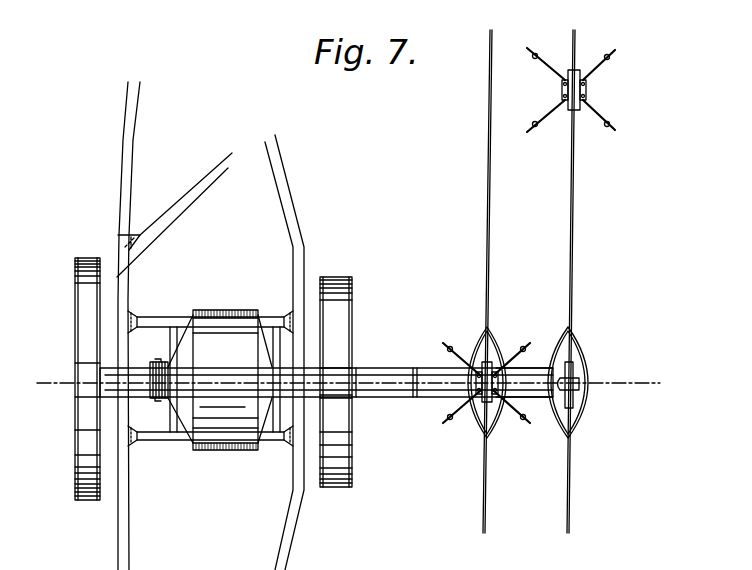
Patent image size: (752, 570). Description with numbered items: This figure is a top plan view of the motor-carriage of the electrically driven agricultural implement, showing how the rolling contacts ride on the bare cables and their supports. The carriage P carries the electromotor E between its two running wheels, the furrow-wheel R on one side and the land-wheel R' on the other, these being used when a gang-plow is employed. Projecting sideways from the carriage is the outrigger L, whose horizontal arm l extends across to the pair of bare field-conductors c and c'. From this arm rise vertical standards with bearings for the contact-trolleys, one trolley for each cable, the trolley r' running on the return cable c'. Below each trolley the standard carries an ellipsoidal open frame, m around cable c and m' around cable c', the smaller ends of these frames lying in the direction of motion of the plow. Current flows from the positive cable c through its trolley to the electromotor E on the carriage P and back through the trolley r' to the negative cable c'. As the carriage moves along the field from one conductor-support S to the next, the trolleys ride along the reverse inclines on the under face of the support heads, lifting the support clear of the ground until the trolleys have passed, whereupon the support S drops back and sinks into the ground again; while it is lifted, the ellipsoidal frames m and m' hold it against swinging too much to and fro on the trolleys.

The furrow-wheel R is at (67, 379).
The land-wheel R' is at (349, 382).
The carriage P is at (279, 352).
The electromotor E is at (217, 351).
The outrigger L is at (377, 368).
The field-conductor c is at (494, 281).
The field-conductor c' is at (581, 281).
The ellipsoidal open frame m is at (497, 380).
The ellipsoidal open frame m' is at (583, 382).
The conductor-support S is at (480, 405).
The horizontal arm l is at (542, 398).
The contact-trolley r' is at (583, 374).